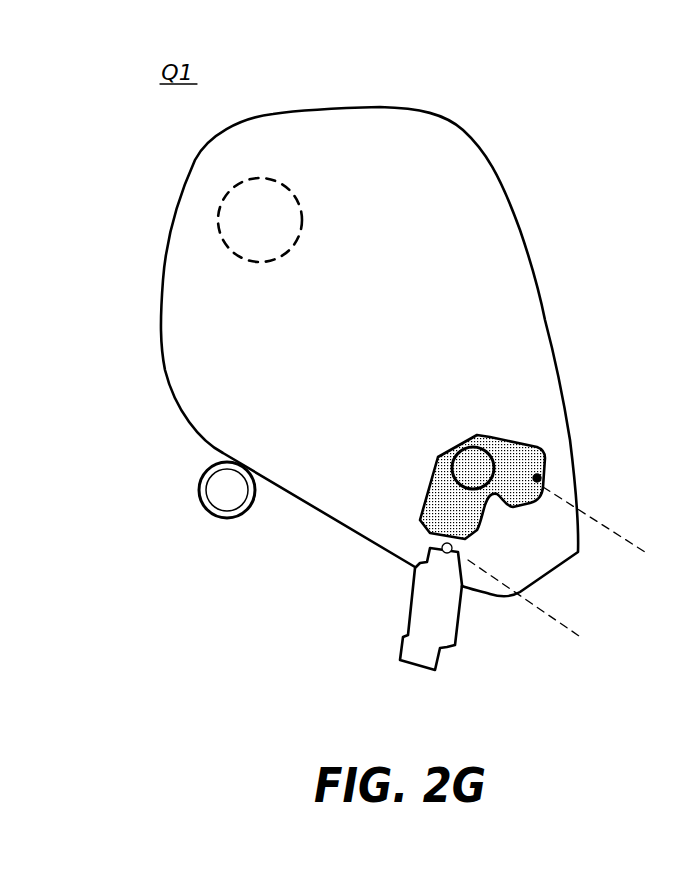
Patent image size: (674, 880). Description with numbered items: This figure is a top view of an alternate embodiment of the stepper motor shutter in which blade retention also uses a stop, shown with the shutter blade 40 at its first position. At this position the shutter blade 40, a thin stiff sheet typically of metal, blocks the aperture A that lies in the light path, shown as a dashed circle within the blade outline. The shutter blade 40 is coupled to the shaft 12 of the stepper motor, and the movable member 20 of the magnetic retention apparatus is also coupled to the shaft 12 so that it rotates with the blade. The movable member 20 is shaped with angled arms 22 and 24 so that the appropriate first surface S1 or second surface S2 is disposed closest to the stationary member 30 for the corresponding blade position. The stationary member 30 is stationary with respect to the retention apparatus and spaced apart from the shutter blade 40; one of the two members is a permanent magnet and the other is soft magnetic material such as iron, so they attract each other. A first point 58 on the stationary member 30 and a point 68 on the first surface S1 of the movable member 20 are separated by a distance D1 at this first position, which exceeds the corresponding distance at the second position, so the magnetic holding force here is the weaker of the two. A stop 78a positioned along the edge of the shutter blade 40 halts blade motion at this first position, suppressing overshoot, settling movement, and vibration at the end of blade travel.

The shaft 12 is at (460, 440).
The movable member 20 is at (535, 451).
The angled arm 22 is at (423, 506).
The angled arm 24 is at (508, 440).
The stationary member 30 is at (441, 619).
The shutter blade 40 is at (240, 372).
The first point 58 is at (442, 550).
The point 68 is at (541, 480).
The stop 78a is at (232, 518).
The aperture A is at (272, 180).
The first surface S1 is at (537, 490).
The second surface S2 is at (430, 548).
The distance D1 is at (647, 553).